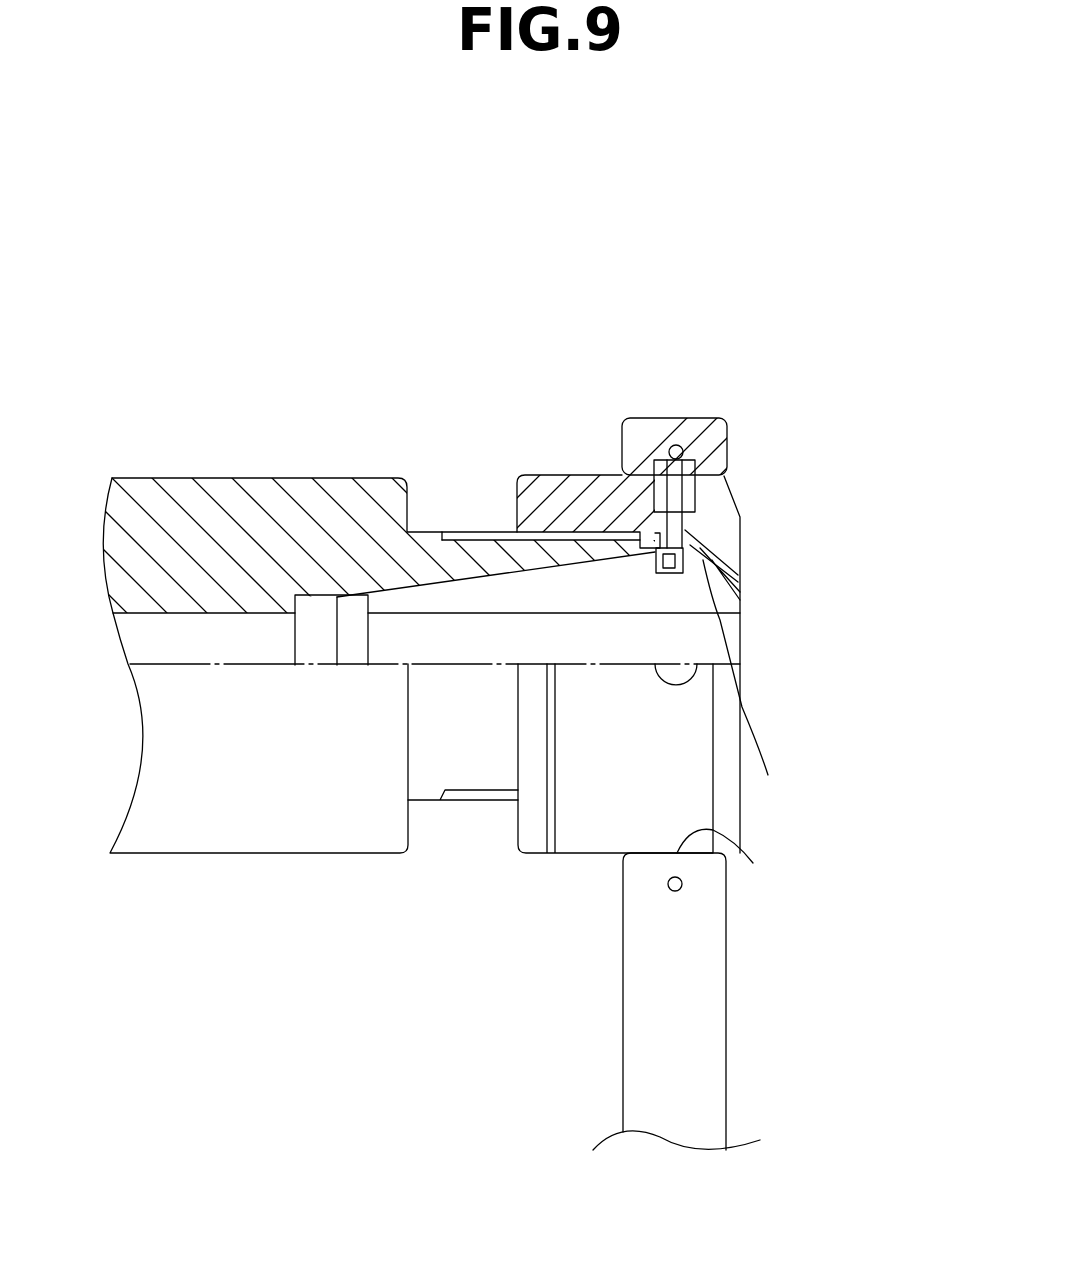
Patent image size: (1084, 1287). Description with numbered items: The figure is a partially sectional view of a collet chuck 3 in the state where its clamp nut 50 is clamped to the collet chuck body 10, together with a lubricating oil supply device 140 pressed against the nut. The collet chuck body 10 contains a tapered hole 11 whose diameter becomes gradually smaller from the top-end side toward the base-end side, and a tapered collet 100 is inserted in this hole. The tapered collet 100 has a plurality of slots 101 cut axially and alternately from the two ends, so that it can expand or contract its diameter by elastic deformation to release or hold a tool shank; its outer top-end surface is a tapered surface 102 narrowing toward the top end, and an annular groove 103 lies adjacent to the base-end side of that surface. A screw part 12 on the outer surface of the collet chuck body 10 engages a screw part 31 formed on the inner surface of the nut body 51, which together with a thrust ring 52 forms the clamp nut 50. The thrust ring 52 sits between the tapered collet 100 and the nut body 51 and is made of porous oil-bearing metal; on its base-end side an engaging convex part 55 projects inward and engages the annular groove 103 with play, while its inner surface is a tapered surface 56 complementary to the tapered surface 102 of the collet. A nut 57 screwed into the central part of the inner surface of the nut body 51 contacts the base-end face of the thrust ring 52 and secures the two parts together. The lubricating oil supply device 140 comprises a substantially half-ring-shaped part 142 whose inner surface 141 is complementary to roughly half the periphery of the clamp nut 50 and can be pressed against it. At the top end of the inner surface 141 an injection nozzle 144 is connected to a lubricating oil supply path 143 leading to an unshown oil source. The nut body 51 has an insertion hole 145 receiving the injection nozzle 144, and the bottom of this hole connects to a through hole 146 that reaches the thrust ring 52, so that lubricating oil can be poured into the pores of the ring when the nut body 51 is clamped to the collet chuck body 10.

The collet chuck 3 is at (647, 230).
The collet chuck body 10 is at (228, 495).
The tapered hole 11 is at (415, 590).
The screw part 12 is at (525, 500).
The screw part 31 is at (585, 530).
The clamp nut 50 is at (845, 588).
The nut body 51 is at (695, 540).
The thrust ring 52 is at (705, 555).
The engaging convex part 55 is at (663, 567).
The tapered surface 56 is at (713, 852).
The nut 57 is at (612, 505).
The tapered collet 100 is at (670, 600).
The slots 101 is at (453, 590).
The tapered surface 102 is at (712, 600).
The annular groove 103 is at (653, 553).
The lubricating oil supply device 140 is at (738, 1007).
The inner surface 141 is at (753, 863).
The substantially half-ring-shaped part 142 is at (657, 433).
The lubricating oil supply path 143 is at (703, 417).
The injection nozzle 144 is at (687, 445).
The insertion hole 145 is at (700, 490).
The through hole 146 is at (680, 525).